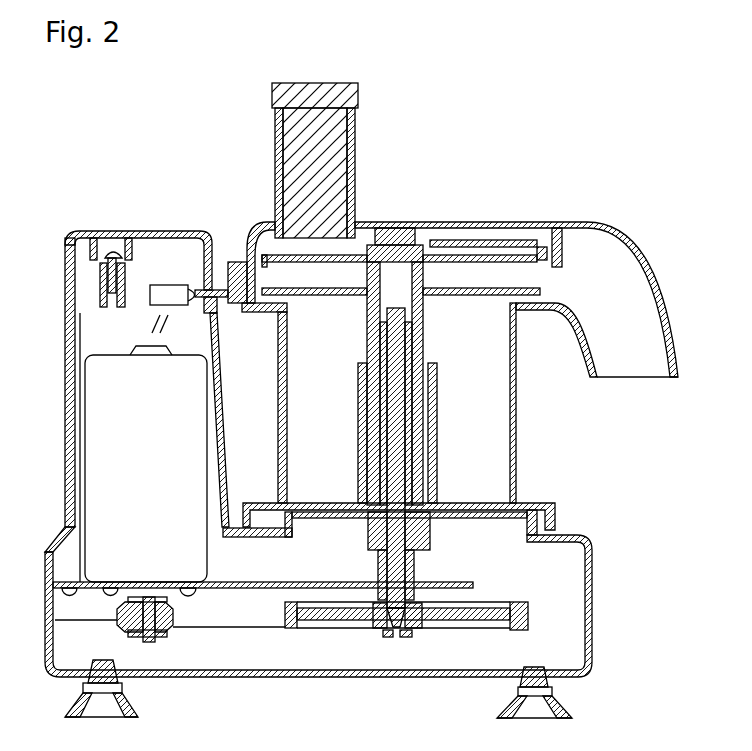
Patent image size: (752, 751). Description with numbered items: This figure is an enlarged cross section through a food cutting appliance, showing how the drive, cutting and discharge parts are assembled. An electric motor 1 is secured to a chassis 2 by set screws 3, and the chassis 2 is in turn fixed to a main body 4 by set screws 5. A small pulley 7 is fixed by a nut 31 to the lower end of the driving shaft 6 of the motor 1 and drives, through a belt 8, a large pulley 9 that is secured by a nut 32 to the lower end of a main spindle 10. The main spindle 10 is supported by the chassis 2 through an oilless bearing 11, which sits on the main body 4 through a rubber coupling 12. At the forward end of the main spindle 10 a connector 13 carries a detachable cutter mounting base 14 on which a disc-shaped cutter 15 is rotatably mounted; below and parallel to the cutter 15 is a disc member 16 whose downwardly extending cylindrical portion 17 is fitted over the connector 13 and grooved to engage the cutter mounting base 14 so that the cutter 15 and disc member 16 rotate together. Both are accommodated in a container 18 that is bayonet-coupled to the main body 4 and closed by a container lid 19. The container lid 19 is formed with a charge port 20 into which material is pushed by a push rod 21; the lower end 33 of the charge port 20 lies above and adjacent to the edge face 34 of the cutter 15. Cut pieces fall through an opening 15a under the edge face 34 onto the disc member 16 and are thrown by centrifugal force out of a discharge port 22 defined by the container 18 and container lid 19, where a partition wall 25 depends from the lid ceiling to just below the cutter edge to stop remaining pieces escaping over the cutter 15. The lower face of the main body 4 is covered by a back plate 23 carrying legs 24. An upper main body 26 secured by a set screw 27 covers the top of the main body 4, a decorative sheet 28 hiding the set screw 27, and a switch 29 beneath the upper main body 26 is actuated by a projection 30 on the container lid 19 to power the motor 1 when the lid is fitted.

The electric motor 1 is at (113, 463).
The chassis 2 is at (227, 585).
The set screws 3 is at (107, 588).
The main body 4 is at (65, 530).
The set screws 5 is at (67, 587).
The driving shaft 6 is at (147, 640).
The small pulley 7 is at (173, 630).
The belt 8 is at (260, 623).
The large pulley 9 is at (310, 620).
The main spindle 10 is at (397, 640).
The oilless bearing 11 is at (412, 568).
The rubber coupling 12 is at (428, 537).
The connector 13 is at (407, 410).
The cutter mounting base 14 is at (393, 260).
The disc-shaped cutter 15 is at (347, 257).
The opening 15a is at (472, 255).
The disc member 16 is at (540, 288).
The cylindrical portion 17 is at (427, 330).
The container 18 is at (515, 460).
The container lid 19 is at (555, 222).
The charge port 20 is at (353, 135).
The push rod 21 is at (333, 98).
The discharge port 22 is at (633, 367).
The back plate 23 is at (433, 673).
The legs 24 is at (565, 702).
The partition wall 25 is at (562, 250).
The upper main body 26 is at (180, 232).
The set screw 27 is at (110, 280).
The decorative sheet 28 is at (107, 233).
The switch 29 is at (173, 293).
The projection 30 is at (213, 283).
The nut 31 is at (163, 630).
The nut 32 is at (388, 632).
The lower end 33 is at (323, 237).
The edge face 34 is at (510, 240).